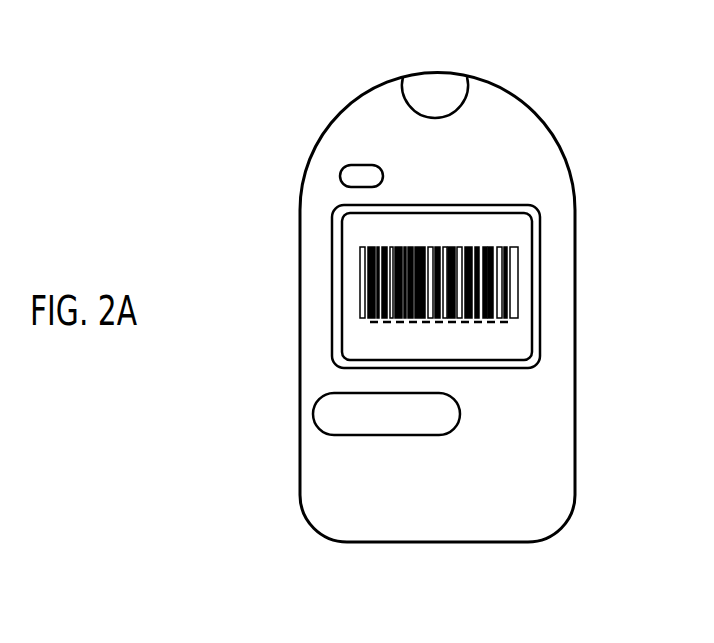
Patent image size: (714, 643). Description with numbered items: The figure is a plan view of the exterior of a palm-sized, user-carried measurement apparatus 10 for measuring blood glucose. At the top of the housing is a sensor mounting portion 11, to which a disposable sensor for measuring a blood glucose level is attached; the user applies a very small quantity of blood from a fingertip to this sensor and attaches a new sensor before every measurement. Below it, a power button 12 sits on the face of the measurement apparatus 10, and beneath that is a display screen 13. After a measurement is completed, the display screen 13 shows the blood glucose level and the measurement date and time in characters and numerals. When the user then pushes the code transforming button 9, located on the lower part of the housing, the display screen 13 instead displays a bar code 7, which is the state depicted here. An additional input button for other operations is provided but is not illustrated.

The bar code 7 is at (518, 255).
The code transforming button 9 is at (313, 410).
The measurement apparatus 10 is at (577, 424).
The sensor mounting portion 11 is at (435, 82).
The power button 12 is at (340, 173).
The display screen 13 is at (527, 292).